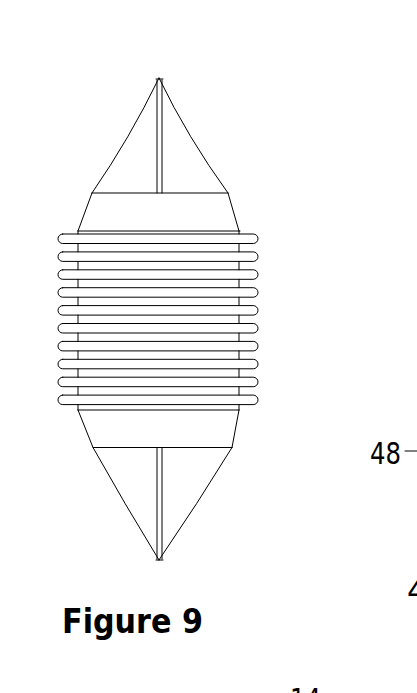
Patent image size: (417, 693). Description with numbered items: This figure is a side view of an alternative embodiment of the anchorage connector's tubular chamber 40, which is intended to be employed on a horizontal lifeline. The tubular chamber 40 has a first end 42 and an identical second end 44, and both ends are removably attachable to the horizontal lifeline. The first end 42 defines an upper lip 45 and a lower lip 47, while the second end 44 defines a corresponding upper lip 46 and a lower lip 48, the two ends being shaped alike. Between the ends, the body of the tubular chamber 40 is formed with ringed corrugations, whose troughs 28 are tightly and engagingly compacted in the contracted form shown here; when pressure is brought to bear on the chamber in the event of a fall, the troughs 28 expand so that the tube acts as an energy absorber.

The tubular chamber 40 is at (275, 267).
The first end 42 is at (159, 78).
The second end 44 is at (161, 562).
The upper lip 45 is at (182, 170).
The upper lip 46 is at (203, 460).
The lower lip 47 is at (132, 147).
The lower lip 48 is at (132, 477).
The troughs 28 is at (240, 390).